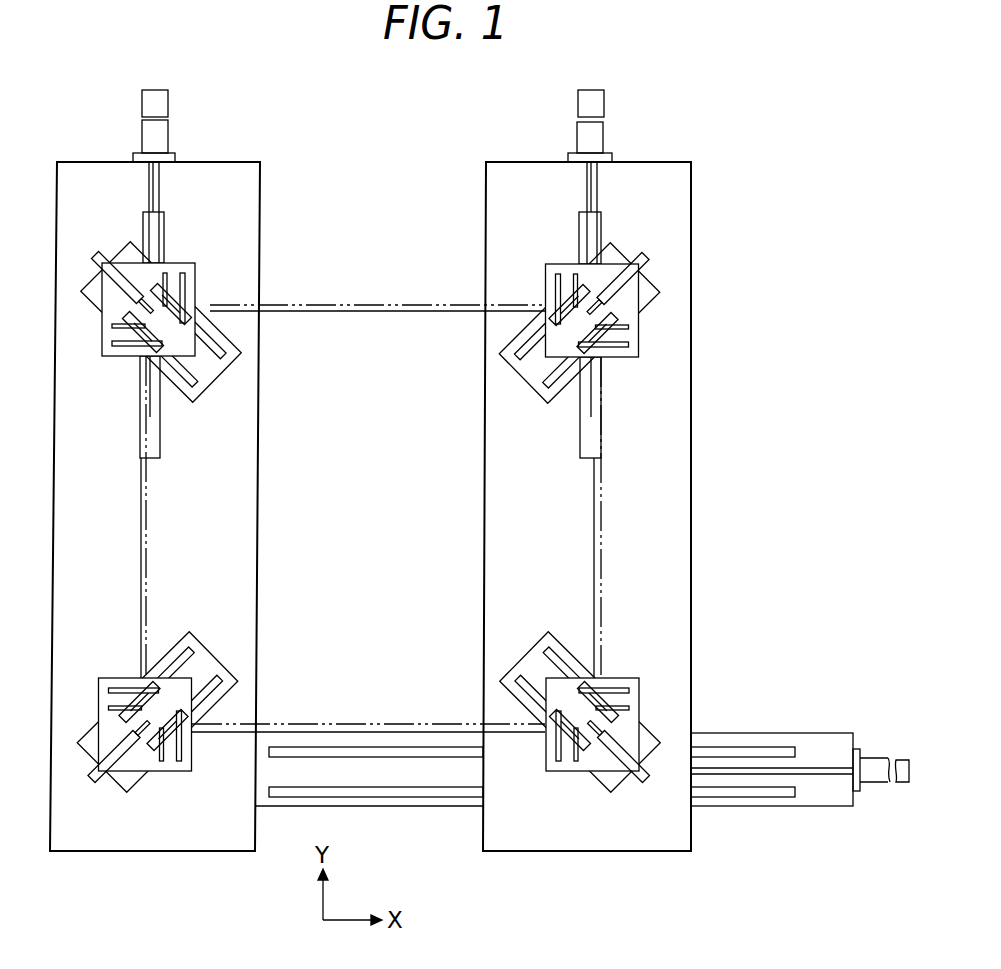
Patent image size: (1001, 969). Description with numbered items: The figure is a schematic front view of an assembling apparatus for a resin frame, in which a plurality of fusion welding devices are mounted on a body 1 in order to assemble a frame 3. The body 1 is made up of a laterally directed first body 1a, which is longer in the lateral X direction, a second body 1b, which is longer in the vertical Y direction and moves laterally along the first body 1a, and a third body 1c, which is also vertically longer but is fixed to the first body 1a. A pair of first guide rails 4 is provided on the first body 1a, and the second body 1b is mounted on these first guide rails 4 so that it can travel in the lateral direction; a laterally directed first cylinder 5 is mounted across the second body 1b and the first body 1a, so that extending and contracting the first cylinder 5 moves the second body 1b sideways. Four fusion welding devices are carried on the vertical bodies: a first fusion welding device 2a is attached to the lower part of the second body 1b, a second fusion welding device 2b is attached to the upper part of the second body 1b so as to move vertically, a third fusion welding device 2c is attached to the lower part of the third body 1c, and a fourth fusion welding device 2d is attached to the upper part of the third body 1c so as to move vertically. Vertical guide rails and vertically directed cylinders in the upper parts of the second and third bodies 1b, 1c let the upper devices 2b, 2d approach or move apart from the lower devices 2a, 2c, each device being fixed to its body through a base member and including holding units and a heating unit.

The body 1 is at (460, 470).
The first body 1a is at (777, 740).
The second body 1b is at (675, 513).
The third body 1c is at (245, 521).
The first fusion welding device 2a is at (607, 730).
The second fusion welding device 2b is at (610, 292).
The third fusion welding device 2c is at (187, 705).
The fourth fusion welding device 2d is at (177, 300).
The frame 3 is at (356, 304).
The first guide rails 4 is at (347, 756).
The first cylinder 5 is at (873, 787).